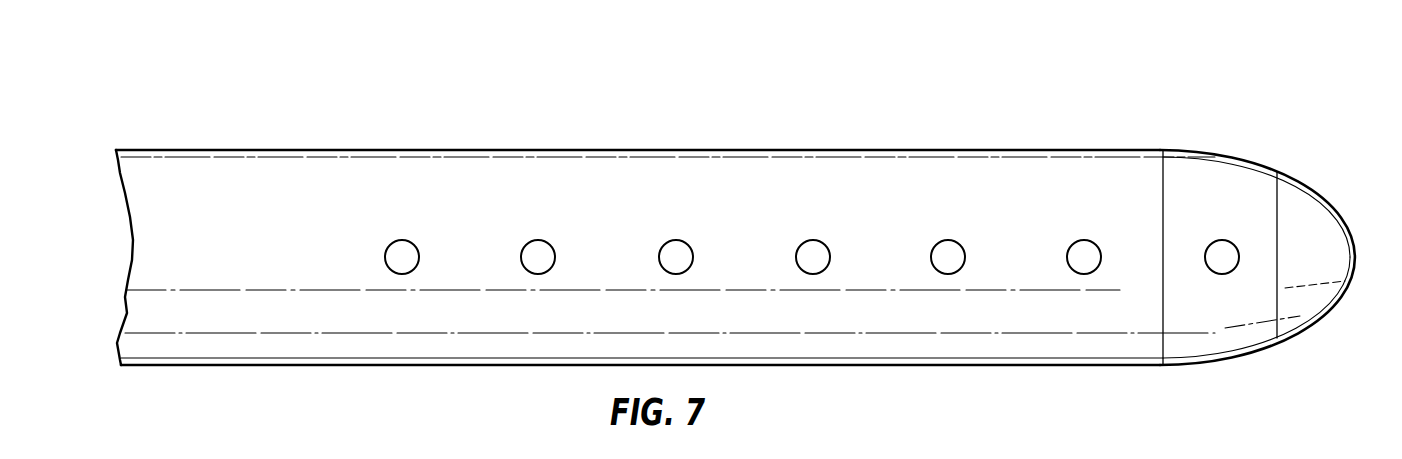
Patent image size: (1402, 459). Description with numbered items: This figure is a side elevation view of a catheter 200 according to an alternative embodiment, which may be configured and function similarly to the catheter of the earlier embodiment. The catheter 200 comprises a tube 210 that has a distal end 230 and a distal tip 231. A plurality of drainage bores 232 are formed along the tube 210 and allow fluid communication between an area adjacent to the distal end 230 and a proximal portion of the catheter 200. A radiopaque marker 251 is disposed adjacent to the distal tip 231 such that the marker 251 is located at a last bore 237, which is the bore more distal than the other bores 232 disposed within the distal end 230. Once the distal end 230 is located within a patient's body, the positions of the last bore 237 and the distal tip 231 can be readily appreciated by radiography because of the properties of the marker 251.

The catheter 200 is at (1113, 70).
The tube 210 is at (213, 149).
The distal end 230 is at (600, 150).
The distal tip 231 is at (1320, 235).
The drainage bores 232 is at (419, 267).
The last bore 237 is at (1228, 272).
The radiopaque marker 251 is at (1218, 168).